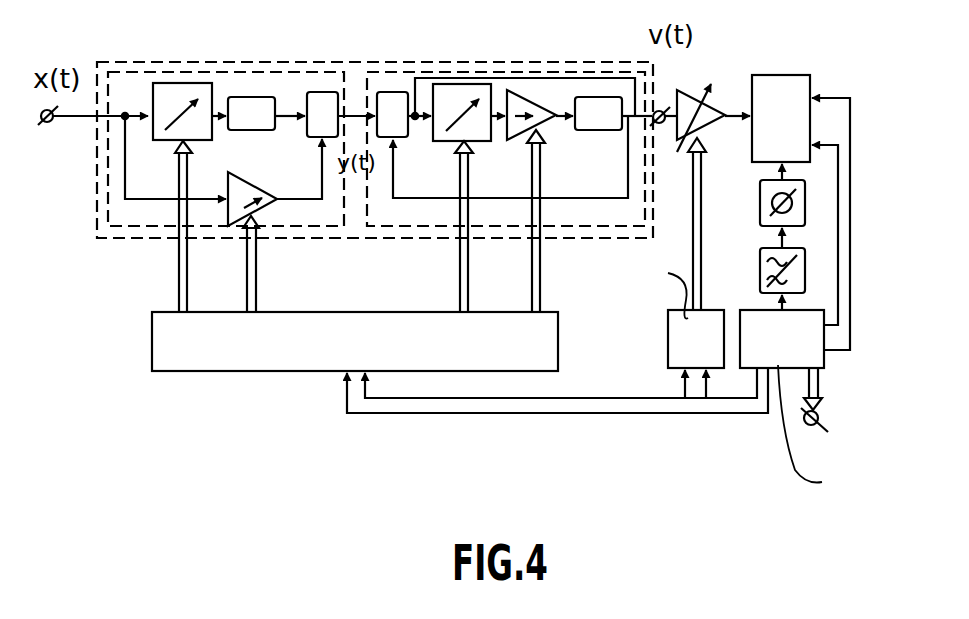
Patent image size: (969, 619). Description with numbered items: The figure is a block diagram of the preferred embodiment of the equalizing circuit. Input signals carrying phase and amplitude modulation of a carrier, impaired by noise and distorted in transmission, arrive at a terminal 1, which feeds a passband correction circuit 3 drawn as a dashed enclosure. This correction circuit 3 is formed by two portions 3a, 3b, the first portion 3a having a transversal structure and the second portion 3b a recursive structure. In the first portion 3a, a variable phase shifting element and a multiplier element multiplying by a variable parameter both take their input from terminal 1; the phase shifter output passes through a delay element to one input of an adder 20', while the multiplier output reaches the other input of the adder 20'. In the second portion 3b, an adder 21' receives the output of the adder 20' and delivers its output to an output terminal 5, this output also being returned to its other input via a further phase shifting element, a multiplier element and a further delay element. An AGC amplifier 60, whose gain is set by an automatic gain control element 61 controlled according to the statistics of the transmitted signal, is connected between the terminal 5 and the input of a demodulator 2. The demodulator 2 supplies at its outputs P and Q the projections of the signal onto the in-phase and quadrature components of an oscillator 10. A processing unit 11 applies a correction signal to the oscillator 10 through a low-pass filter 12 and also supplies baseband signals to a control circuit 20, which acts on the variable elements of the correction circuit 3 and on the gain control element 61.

The terminal 1 is at (57, 110).
The demodulator 2 is at (765, 78).
The passband correction circuit 3 is at (352, 76).
The first portion 3a is at (313, 187).
The second portion 3b is at (610, 188).
The output terminal 5 is at (665, 126).
The oscillator 10 is at (760, 205).
The processing unit 11 is at (810, 355).
The low-pass filter 12 is at (757, 269).
The control circuit 20 is at (460, 278).
The adder 20' is at (330, 71).
The adder 21' is at (506, 71).
The AGC amplifier 60 is at (690, 90).
The automatic gain control element 61 is at (678, 347).